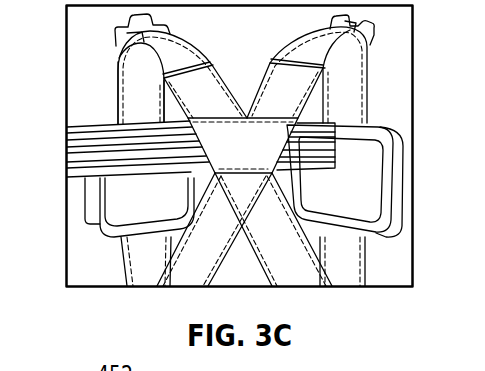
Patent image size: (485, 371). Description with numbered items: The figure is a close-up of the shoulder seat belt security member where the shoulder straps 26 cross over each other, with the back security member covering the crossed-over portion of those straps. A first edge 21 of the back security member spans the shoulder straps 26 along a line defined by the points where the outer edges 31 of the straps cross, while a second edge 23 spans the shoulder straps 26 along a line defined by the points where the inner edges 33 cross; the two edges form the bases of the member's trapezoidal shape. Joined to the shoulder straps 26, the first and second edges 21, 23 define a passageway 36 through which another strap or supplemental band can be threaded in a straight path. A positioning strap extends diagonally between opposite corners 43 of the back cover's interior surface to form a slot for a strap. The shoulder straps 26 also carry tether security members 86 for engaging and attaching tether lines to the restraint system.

The first edge 21 is at (243, 177).
The second edge 23 is at (268, 122).
The shoulder straps 26 is at (145, 97).
The outer edges 31 is at (187, 112).
The inner edges 33 is at (265, 83).
The passageway 36 is at (197, 143).
The opposite corners 43 is at (387, 135).
The tether security members 86 is at (320, 32).